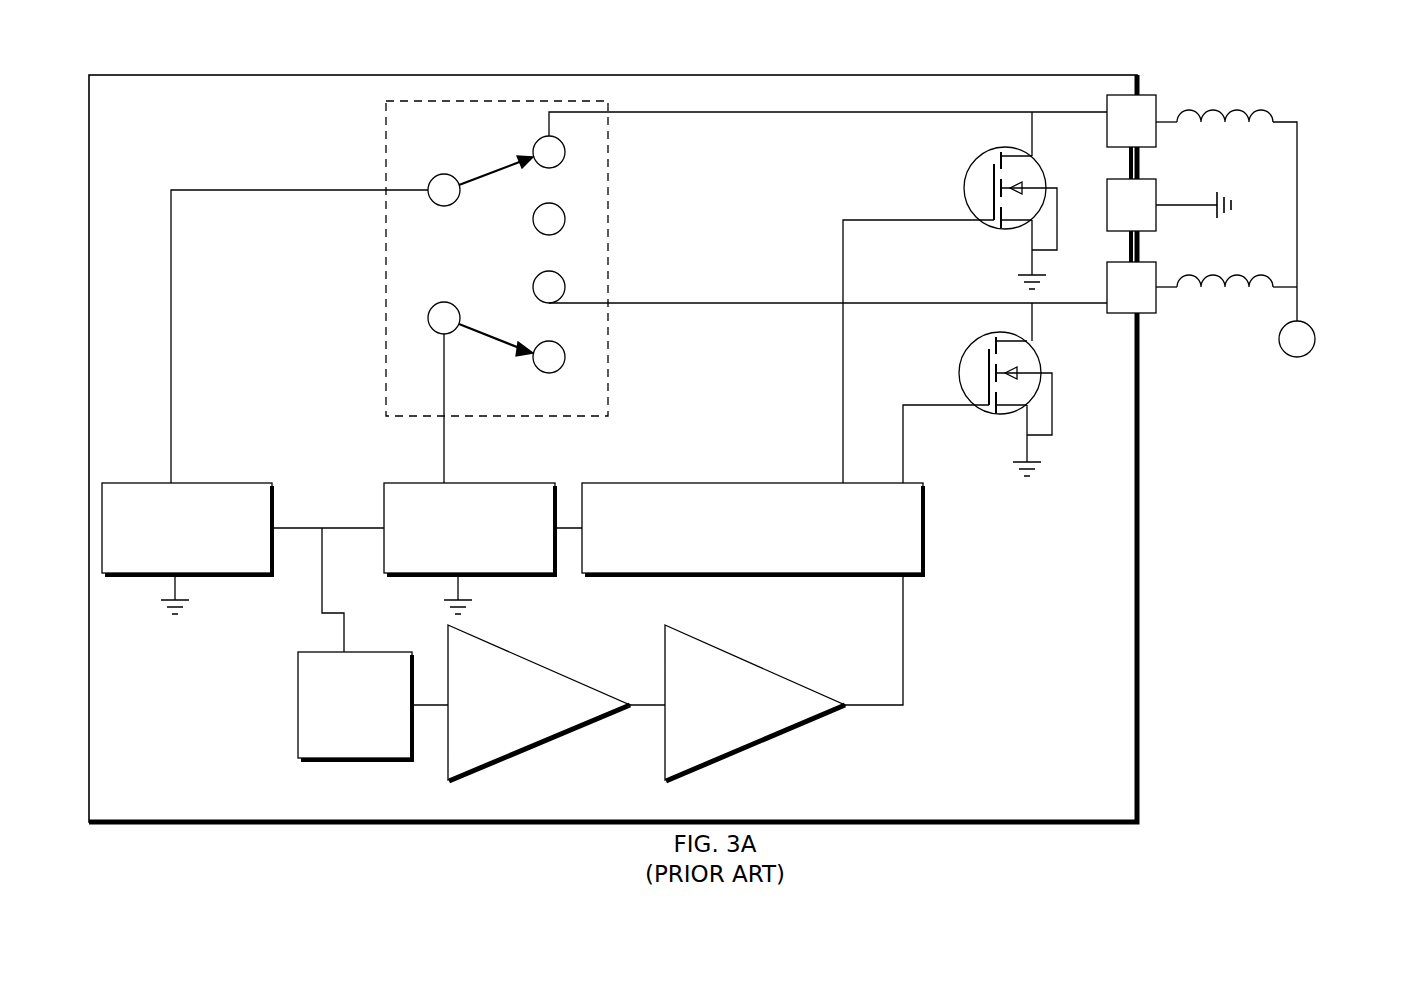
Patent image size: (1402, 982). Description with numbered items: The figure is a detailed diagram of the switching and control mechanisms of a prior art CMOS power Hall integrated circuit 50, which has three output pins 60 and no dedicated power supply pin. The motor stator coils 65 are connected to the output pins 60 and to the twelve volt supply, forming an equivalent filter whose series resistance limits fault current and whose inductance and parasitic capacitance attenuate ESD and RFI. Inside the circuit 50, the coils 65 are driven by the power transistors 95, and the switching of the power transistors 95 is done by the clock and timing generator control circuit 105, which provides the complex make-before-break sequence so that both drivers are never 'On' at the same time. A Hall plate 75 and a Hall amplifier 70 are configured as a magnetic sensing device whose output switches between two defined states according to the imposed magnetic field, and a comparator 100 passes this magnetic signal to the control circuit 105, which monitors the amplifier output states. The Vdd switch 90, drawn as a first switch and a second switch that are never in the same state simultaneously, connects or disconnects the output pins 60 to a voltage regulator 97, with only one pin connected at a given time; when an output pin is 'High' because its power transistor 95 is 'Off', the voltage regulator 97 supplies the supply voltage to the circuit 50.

The Hall integrated circuit 50 is at (168, 75).
The Vdd switch 90 is at (386, 133).
The output pins 60 is at (1150, 95).
The motor stator coils 65 is at (1262, 108).
The power transistors 95 is at (1041, 365).
The voltage regulator 97 is at (240, 483).
The clock/timing generator control circuit 105 is at (923, 530).
The Hall plate 75 is at (298, 705).
The Hall amplifier 70 is at (512, 762).
The comparator 100 is at (773, 740).